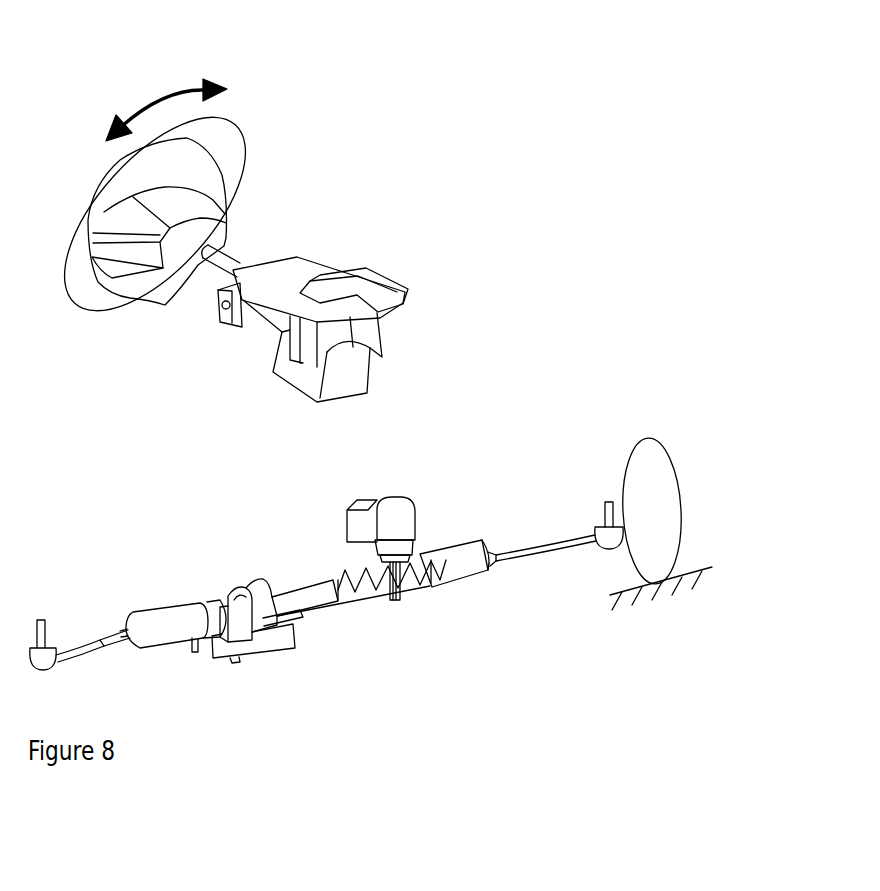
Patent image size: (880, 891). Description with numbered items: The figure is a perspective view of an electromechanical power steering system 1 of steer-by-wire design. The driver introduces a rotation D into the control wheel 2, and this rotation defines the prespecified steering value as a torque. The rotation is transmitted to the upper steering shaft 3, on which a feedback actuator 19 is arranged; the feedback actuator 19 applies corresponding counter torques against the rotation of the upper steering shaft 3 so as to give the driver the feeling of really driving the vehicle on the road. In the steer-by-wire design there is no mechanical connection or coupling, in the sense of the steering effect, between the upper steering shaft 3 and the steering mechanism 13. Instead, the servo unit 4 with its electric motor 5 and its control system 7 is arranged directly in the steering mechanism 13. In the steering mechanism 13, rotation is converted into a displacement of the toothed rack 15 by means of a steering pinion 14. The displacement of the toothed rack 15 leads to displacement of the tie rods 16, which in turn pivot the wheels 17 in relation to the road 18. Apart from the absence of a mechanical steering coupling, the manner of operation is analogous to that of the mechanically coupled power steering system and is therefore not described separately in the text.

The electromechanical power steering system 1 is at (410, 170).
The control wheel 2 is at (228, 155).
The upper steering shaft 3 is at (222, 262).
The servo unit 4 is at (406, 474).
The electric motor 5 is at (401, 506).
The control system 7 is at (358, 528).
The steering mechanism 13 is at (437, 518).
The steering pinion 14 is at (397, 602).
The toothed rack 15 is at (366, 594).
The tie rods 16 is at (102, 640).
The wheels 17 is at (664, 518).
The road 18 is at (664, 594).
The feedback actuator 19 is at (360, 329).
The rotation D is at (157, 92).